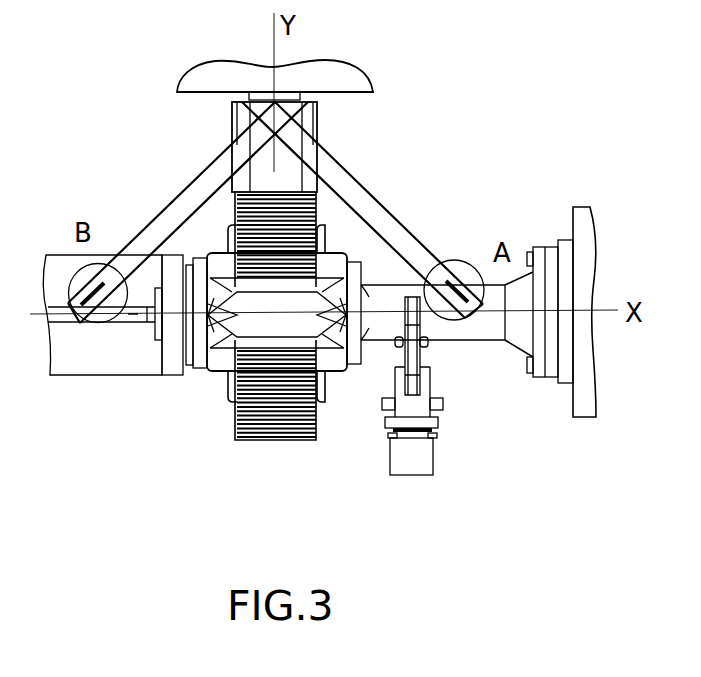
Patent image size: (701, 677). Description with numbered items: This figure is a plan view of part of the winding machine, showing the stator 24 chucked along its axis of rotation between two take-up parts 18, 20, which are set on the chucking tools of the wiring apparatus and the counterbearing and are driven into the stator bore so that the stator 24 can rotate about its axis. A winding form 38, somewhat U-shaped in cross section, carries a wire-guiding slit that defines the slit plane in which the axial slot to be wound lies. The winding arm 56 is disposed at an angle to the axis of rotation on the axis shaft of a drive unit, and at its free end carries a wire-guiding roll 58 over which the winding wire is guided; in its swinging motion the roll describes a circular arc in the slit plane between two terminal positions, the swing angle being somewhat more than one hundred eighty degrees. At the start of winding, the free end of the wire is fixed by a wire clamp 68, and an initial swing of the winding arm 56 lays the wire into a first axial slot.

The take-up part 18 is at (337, 373).
The take-up part 20 is at (221, 366).
The stator 24 is at (257, 440).
The winding form 38 is at (212, 342).
The winding arm 56 is at (360, 183).
The wire-guiding roll 58 is at (453, 260).
The wire clamp 68 is at (432, 377).